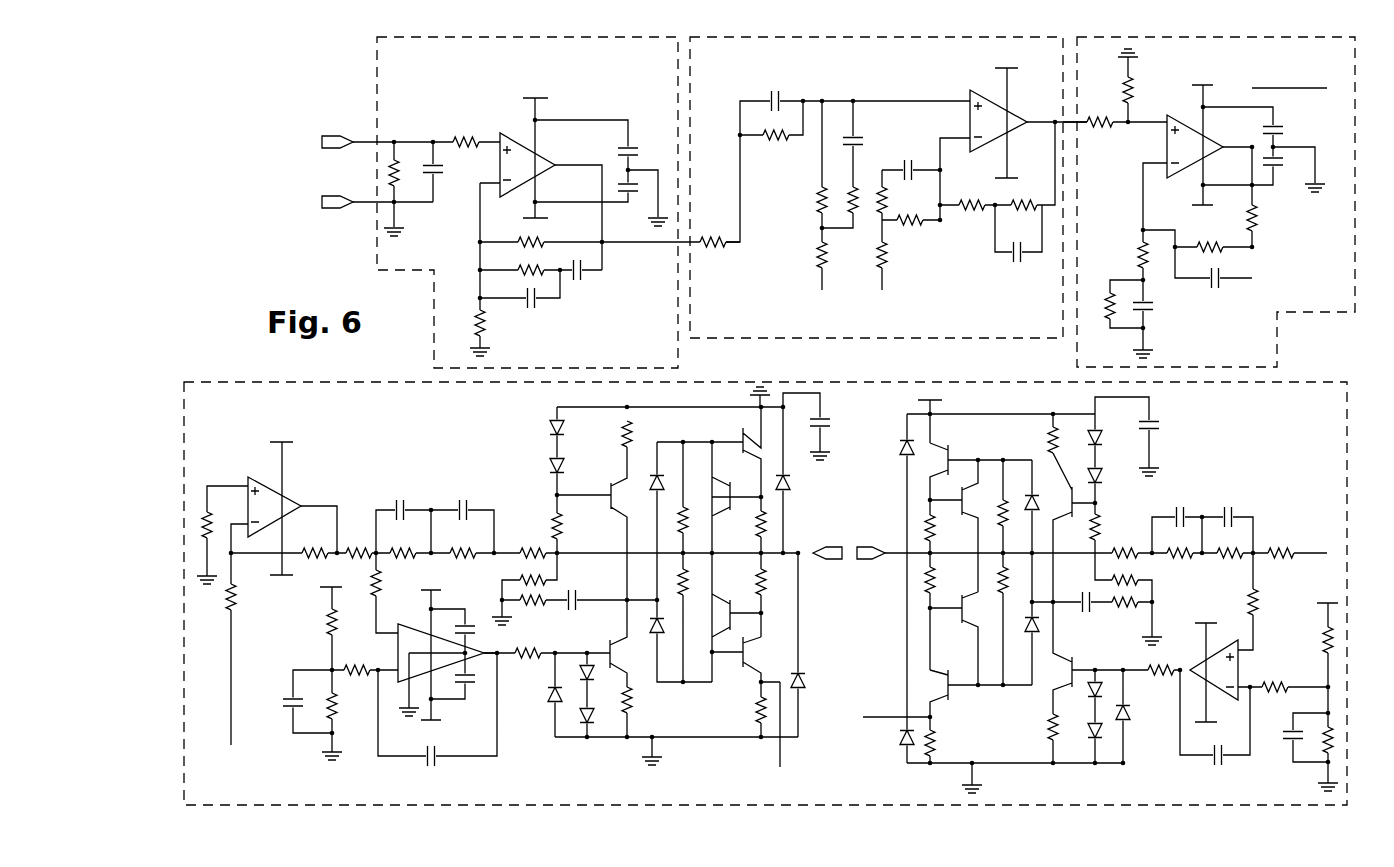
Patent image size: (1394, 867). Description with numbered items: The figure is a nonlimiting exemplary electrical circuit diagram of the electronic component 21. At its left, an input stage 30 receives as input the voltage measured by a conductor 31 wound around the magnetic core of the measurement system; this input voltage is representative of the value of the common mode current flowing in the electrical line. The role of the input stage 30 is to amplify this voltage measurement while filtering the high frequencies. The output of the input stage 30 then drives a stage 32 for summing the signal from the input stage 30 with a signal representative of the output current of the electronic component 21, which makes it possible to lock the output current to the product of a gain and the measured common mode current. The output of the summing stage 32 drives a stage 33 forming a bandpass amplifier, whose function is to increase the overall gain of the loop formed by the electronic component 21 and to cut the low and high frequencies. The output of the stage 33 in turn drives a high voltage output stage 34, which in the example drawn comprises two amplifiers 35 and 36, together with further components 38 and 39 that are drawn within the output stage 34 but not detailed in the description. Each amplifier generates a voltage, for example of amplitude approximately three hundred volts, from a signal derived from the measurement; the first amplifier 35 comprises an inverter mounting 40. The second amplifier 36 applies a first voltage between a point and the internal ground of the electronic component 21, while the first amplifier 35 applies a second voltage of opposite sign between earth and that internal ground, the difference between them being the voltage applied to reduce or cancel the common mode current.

The electronic component 21 is at (322, 32).
The input stage 30 is at (376, 100).
The conductor 31 is at (360, 145).
The summing stage 32 is at (837, 338).
The bandpass amplifier stage 33 is at (1077, 360).
The high voltage output stage 34 is at (395, 382).
The first amplifier 35 is at (790, 759).
The second amplifier 36 is at (885, 731).
The supply capacitor 38 is at (833, 422).
The supply capacitor 39 is at (1162, 425).
The inverter mounting 40 is at (296, 500).